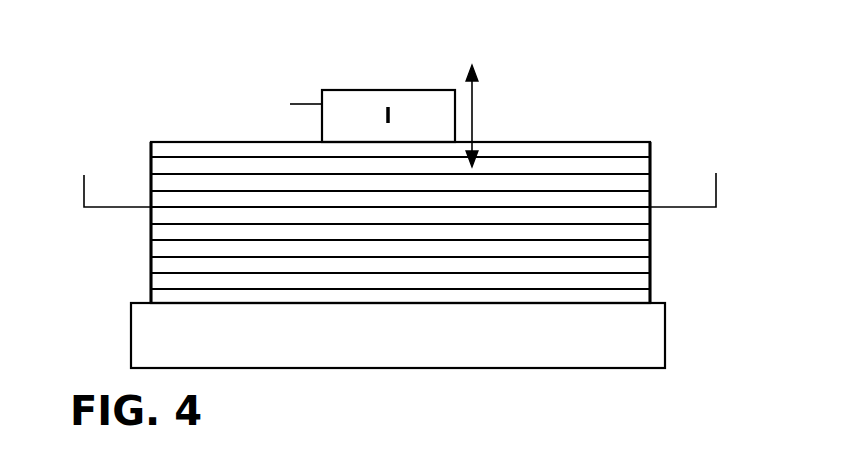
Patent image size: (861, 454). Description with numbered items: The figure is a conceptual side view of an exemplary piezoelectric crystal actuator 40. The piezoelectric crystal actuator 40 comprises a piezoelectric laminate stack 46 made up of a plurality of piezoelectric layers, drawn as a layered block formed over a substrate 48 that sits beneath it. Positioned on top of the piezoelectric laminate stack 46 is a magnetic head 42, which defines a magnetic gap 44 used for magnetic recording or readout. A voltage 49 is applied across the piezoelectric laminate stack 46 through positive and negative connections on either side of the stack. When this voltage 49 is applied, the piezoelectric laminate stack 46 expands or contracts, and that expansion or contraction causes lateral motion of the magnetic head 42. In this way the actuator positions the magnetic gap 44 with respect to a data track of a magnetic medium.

The piezoelectric crystal actuator 40 is at (612, 97).
The magnetic head 42 is at (290, 104).
The magnetic gap 44 is at (383, 113).
The piezoelectric laminate stack 46 is at (655, 262).
The substrate 48 is at (607, 355).
The voltage 49 is at (68, 162).